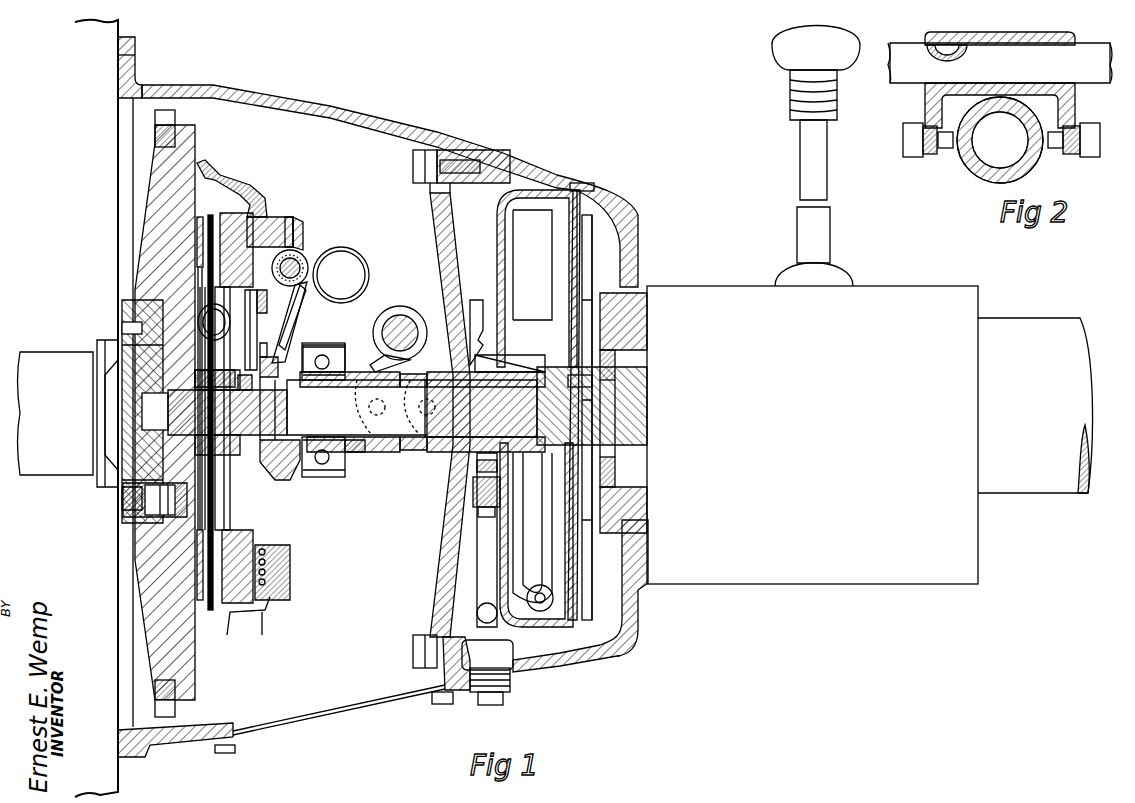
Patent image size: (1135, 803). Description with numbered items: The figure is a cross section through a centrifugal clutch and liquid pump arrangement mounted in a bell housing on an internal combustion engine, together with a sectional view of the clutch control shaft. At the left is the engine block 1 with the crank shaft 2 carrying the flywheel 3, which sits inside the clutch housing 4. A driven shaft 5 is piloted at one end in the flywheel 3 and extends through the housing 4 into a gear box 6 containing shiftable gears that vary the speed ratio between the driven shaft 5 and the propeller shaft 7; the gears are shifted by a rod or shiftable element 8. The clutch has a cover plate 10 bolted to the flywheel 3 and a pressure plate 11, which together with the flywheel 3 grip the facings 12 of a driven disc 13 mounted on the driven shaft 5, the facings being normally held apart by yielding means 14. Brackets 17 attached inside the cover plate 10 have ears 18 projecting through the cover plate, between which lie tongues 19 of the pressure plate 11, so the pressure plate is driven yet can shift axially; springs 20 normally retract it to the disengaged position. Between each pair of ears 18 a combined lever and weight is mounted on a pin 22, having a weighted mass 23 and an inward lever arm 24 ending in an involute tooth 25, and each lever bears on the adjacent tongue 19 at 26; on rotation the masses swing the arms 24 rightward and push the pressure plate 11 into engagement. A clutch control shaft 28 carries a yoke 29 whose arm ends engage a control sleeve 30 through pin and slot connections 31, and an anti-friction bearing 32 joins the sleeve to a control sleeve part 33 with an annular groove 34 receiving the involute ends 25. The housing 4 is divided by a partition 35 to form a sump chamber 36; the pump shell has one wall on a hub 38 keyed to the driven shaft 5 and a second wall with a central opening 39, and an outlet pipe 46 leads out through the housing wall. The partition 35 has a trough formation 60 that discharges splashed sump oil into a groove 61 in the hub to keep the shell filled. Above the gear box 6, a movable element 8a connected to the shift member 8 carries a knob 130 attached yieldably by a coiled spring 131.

In FIG. 1, the engine block 1 is at (137, 53).
In FIG. 1, the crank shaft 2 is at (60, 358).
In FIG. 1, the flywheel 3 is at (150, 194).
In FIG. 1, the clutch housing 4 is at (393, 121).
In FIG. 1, the driven shaft 5 is at (348, 432).
In FIG. 1, the gear box 6 is at (903, 585).
In FIG. 1, the propeller shaft 7 is at (1040, 495).
In FIG. 1, the shiftable element 8 is at (805, 232).
In FIG. 1, the movable element 8a is at (805, 183).
In FIG. 1, the cover plate 10 is at (250, 207).
In FIG. 1, the pressure plate 11 is at (267, 203).
In FIG. 1, the facings 12 is at (200, 607).
In FIG. 1, the driven disc 13 is at (207, 483).
In FIG. 1, the yielding means 14 is at (208, 220).
In FIG. 1, the brackets 17 is at (231, 408).
In FIG. 1, the ears 18 is at (303, 240).
In FIG. 1, the tongues 19 is at (288, 233).
In FIG. 1, the springs 20 is at (277, 597).
In FIG. 1, the pin 22 is at (297, 278).
In FIG. 1, the weighted mass 23 is at (347, 263).
In FIG. 1, the lever arm 24 is at (290, 328).
In FIG. 1, the involute tooth 25 is at (277, 357).
In FIG. 1, the engagement point 26 is at (303, 250).
In FIG. 1, the clutch control shaft 28 is at (382, 330).
In FIG. 2, the clutch control shaft 28 is at (900, 78).
In FIG. 2, the yoke 29 is at (930, 103).
In FIG. 1, the control sleeve 30 is at (382, 452).
In FIG. 2, the control sleeve 30 is at (983, 182).
In FIG. 2, the pin and slot connections 31 is at (948, 143).
In FIG. 1, the anti-friction bearing 32 is at (323, 470).
In FIG. 1, the control sleeve part 33 is at (317, 477).
In FIG. 1, the annular groove 34 is at (290, 460).
In FIG. 1, the partition 35 is at (437, 234).
In FIG. 1, the sump chamber 36 is at (637, 627).
In FIG. 1, the hub 38 is at (562, 367).
In FIG. 1, the central opening 39 is at (503, 363).
In FIG. 1, the outlet pipe 46 is at (485, 557).
In FIG. 1, the trough formation 60 is at (467, 320).
In FIG. 1, the groove 61 is at (512, 347).
In FIG. 1, the knob 130 is at (770, 45).
In FIG. 1, the coiled spring 131 is at (790, 106).